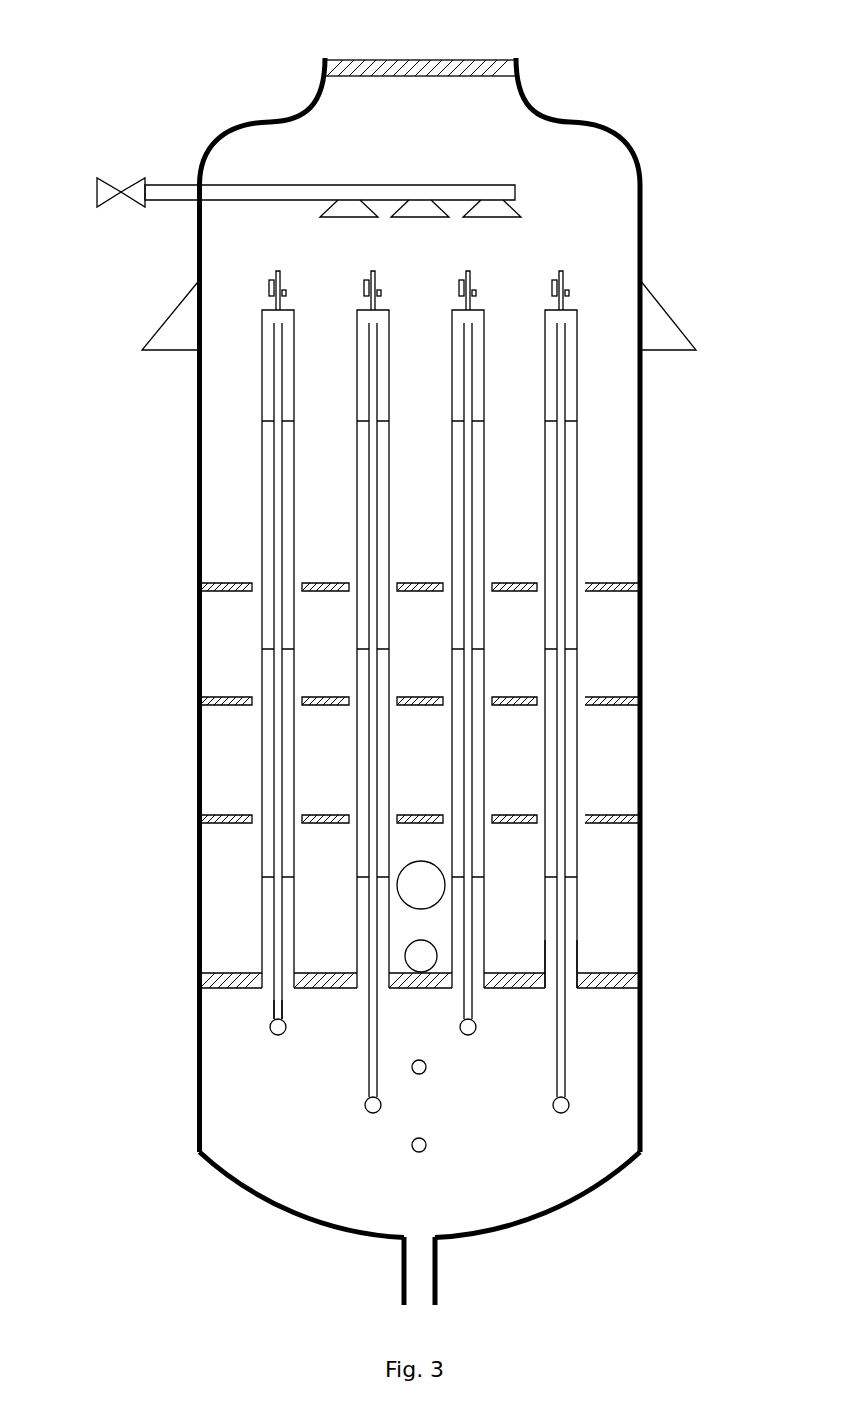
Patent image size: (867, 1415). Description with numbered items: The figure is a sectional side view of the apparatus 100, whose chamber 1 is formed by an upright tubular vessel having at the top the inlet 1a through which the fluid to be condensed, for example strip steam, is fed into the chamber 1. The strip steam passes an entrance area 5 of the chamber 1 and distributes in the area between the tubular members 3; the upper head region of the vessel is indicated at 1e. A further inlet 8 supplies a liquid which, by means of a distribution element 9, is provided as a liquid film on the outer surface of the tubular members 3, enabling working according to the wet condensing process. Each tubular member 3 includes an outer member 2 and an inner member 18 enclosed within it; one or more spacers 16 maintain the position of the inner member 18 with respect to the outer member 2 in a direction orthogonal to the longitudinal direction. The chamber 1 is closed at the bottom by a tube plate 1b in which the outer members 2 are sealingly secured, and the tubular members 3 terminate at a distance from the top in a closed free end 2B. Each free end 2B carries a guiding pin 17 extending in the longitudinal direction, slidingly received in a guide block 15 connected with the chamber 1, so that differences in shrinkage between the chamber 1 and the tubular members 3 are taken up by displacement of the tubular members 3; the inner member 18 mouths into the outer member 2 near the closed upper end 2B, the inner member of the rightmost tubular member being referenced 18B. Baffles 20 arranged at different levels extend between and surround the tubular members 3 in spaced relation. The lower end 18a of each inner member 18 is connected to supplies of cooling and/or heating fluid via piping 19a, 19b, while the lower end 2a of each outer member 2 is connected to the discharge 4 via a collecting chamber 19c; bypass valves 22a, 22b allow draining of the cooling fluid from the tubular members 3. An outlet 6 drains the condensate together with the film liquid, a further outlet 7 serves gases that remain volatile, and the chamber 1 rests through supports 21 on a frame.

The chamber 1 is at (199, 735).
The inlet 1a is at (380, 60).
The tube plate 1b is at (213, 980).
The upper head of vessel 1e is at (275, 119).
The outer member 2 is at (263, 500).
The lower end of the outer member 2a is at (583, 960).
The upper end of the outer member 2B is at (578, 310).
The tubular member 3 is at (580, 525).
The discharge 4 is at (420, 1263).
The entrance area 5 is at (490, 138).
The outlet 6 is at (412, 947).
The further outlet 7 is at (397, 882).
The further inlet 8 is at (122, 185).
The distribution element 9 is at (493, 210).
The guide block 15 is at (268, 287).
The spacer 16 is at (263, 421).
The guiding pin 17 is at (565, 275).
The inner member 18 is at (277, 367).
The lower end of the inner member 18a is at (272, 1022).
The inner tube 18B is at (567, 327).
The piping 19a is at (272, 1033).
The piping 19b is at (367, 1111).
The collecting chamber 19c is at (482, 1198).
The baffle 20 is at (240, 588).
The support 21 is at (663, 327).
The bypass valve 22a is at (424, 1074).
The bypass valve 22b is at (424, 1152).
The apparatus 100 is at (672, 1220).